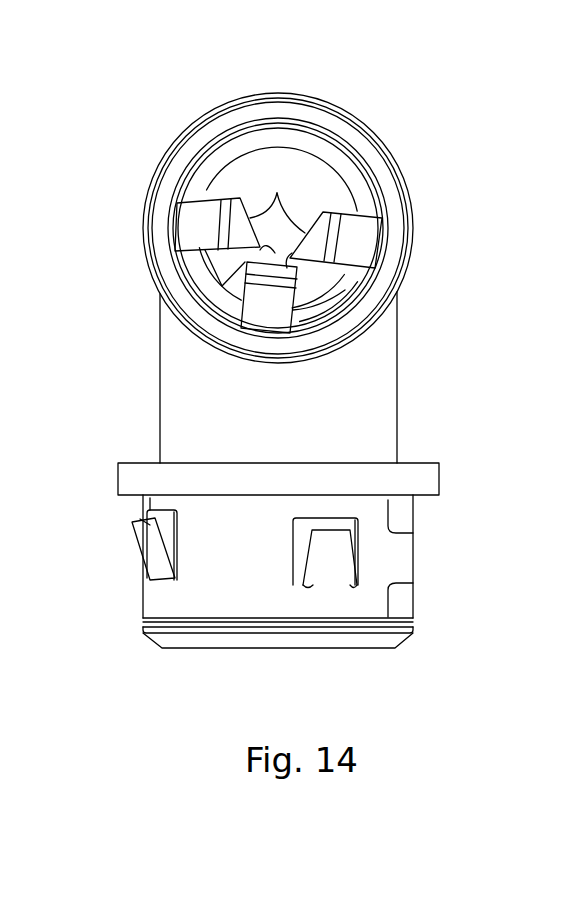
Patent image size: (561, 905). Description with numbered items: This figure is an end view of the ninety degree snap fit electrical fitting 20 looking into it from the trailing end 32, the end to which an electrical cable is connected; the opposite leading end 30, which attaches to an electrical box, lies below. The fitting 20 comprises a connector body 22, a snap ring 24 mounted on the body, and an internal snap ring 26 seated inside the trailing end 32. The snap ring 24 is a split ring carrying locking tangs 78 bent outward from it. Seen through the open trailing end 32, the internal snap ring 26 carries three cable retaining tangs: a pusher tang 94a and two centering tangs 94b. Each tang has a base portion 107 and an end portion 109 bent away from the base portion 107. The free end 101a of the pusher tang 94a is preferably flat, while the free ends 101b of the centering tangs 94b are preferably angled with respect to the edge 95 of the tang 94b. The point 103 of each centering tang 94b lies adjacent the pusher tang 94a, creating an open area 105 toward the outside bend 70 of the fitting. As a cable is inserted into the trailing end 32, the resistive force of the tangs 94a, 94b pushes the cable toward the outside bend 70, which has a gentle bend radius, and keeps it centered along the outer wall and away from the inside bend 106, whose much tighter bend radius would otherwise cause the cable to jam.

The ninety degree snap fit electrical fitting 20 is at (127, 133).
The connector body 22 is at (296, 418).
The snap ring 24 is at (252, 559).
The internal snap ring 26 is at (373, 187).
The leading end 30 is at (278, 650).
The trailing end 32 is at (282, 94).
The outside bend 70 is at (284, 146).
The locking tangs 78 is at (330, 550).
The pusher tang 94a is at (262, 318).
The centering tangs 94b is at (202, 210).
The edge 95 is at (167, 295).
The free end of pusher tang 101a is at (190, 326).
The free ends of centering tangs 101b is at (280, 200).
The point 103 is at (340, 279).
The open area 105 is at (320, 178).
The inside bend 106 is at (339, 311).
The base portion 107 is at (198, 166).
The end portion 109 is at (243, 235).